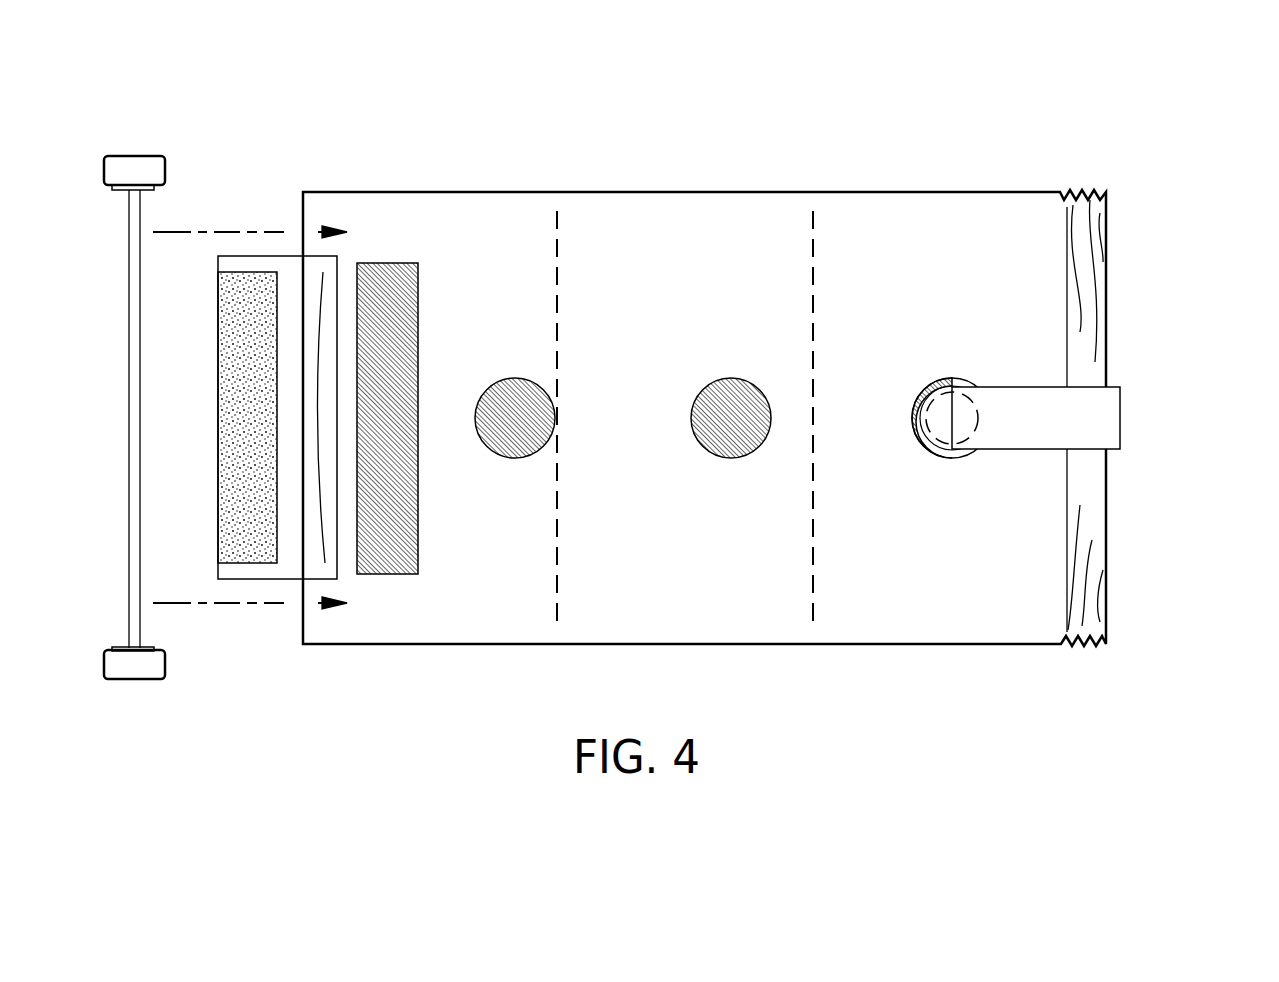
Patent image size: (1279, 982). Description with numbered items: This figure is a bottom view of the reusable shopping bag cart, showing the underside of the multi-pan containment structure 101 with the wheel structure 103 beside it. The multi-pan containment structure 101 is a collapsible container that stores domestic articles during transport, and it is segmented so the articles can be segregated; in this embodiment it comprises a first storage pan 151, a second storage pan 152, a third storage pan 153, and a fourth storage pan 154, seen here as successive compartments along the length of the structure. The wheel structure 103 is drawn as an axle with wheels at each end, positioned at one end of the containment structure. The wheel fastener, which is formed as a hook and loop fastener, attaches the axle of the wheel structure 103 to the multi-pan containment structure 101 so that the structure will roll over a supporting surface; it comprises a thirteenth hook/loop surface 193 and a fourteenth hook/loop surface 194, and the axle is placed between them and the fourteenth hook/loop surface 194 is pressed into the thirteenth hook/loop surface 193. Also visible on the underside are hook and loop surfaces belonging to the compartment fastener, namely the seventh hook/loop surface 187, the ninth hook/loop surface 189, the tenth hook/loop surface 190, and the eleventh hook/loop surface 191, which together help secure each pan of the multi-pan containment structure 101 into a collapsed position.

The multi-pan containment structure 101 is at (1110, 520).
The wheel structure 103 is at (128, 172).
The first storage pan 151 is at (460, 205).
The second storage pan 152 is at (683, 205).
The third storage pan 153 is at (900, 205).
The fourth storage pan 154 is at (1085, 195).
The seventh hook/loop surface 187 is at (958, 428).
The ninth hook/loop surface 189 is at (940, 378).
The tenth hook/loop surface 190 is at (740, 400).
The eleventh hook/loop surface 191 is at (525, 398).
The thirteenth hook/loop surface 193 is at (405, 289).
The fourteenth hook/loop surface 194 is at (243, 303).